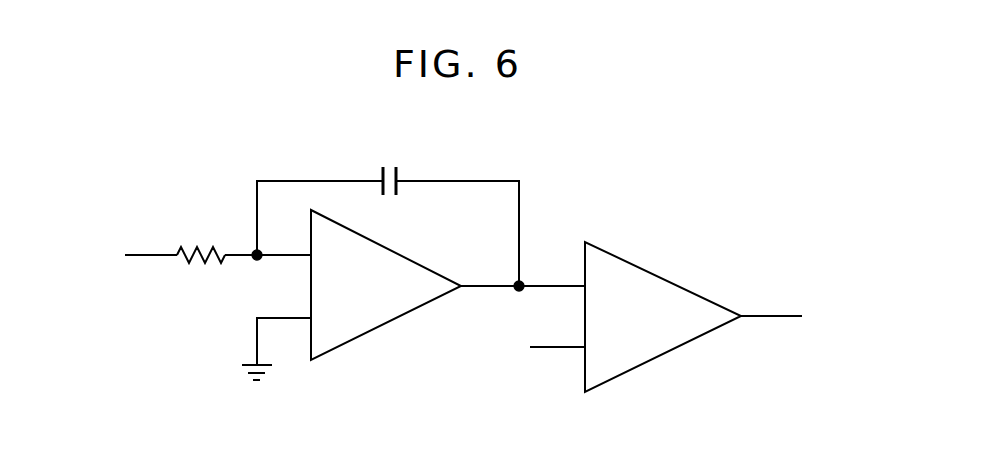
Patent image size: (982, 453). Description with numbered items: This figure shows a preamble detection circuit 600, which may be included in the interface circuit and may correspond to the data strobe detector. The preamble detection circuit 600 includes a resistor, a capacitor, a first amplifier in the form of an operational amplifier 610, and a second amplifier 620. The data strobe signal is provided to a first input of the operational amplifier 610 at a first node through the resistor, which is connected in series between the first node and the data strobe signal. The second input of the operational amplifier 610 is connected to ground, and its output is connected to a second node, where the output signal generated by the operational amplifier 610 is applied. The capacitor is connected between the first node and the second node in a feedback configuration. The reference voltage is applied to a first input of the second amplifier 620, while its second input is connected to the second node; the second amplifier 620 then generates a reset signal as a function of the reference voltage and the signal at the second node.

The preamble detection circuit 600 is at (852, 94).
The operational amplifier 610 is at (388, 248).
The second amplifier 620 is at (665, 278).